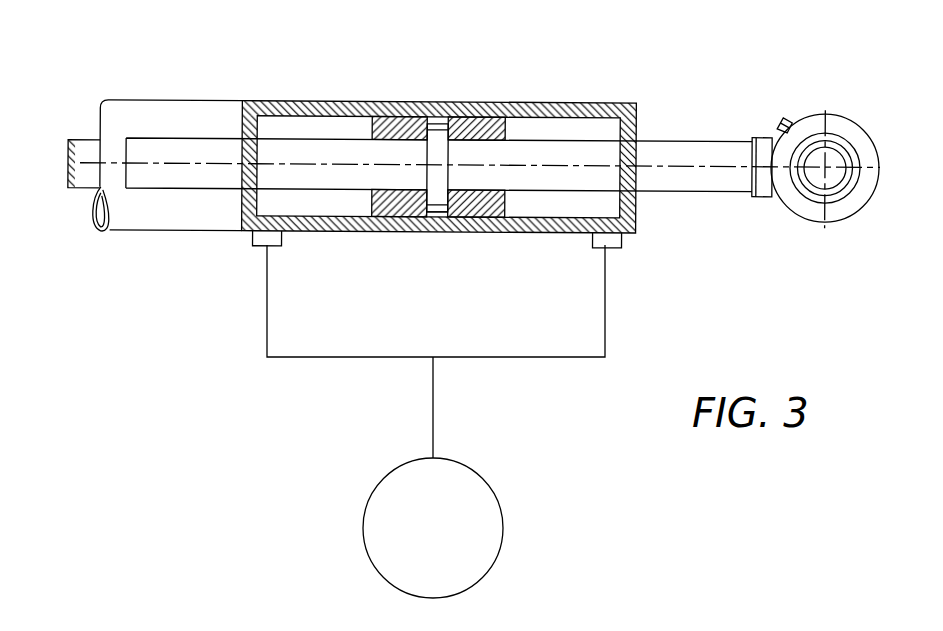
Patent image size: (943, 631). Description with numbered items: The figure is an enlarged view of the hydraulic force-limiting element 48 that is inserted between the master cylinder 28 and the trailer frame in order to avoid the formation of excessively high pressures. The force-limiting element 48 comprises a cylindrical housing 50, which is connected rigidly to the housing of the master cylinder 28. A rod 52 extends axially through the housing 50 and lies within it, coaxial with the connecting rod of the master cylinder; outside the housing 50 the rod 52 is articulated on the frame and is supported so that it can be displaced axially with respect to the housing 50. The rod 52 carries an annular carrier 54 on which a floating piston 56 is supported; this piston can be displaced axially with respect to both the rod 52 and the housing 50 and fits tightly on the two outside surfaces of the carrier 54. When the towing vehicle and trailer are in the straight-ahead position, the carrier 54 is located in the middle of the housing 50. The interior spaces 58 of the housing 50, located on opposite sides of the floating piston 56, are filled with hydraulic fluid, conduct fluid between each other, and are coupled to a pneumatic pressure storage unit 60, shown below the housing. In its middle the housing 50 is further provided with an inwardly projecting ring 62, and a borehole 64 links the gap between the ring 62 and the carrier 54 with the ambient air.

The master cylinder 28 is at (147, 218).
The hydraulic force-limiting element 48 is at (384, 92).
The cylindrical housing 50 is at (382, 231).
The rod 52 is at (733, 184).
The annular carrier 54 is at (512, 232).
The floating piston 56 is at (375, 108).
The interior spaces 58 is at (268, 202).
The pneumatic pressure storage unit 60 is at (492, 530).
The ring 62 is at (443, 231).
The borehole 64 is at (437, 108).